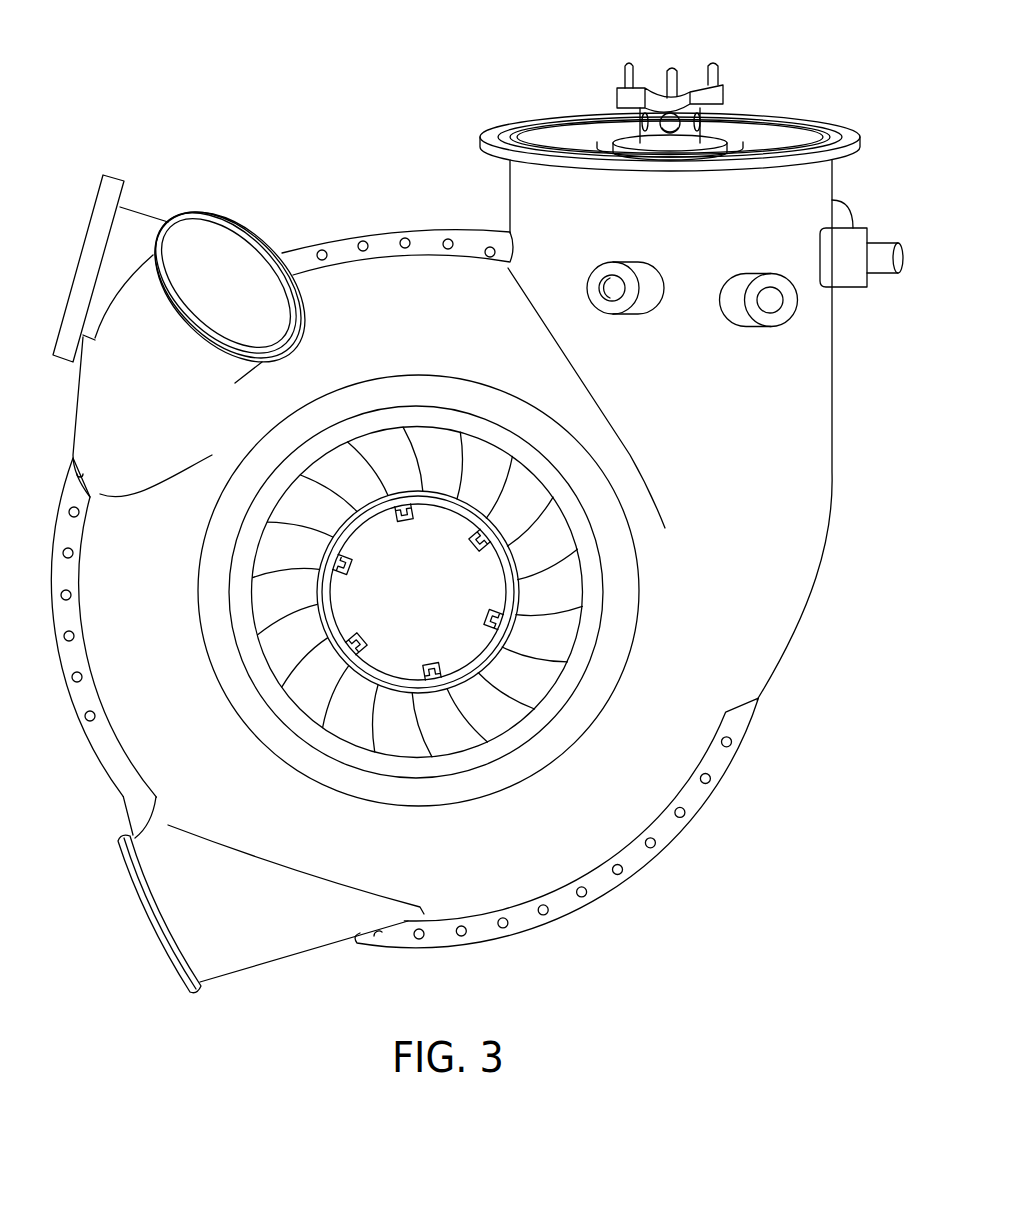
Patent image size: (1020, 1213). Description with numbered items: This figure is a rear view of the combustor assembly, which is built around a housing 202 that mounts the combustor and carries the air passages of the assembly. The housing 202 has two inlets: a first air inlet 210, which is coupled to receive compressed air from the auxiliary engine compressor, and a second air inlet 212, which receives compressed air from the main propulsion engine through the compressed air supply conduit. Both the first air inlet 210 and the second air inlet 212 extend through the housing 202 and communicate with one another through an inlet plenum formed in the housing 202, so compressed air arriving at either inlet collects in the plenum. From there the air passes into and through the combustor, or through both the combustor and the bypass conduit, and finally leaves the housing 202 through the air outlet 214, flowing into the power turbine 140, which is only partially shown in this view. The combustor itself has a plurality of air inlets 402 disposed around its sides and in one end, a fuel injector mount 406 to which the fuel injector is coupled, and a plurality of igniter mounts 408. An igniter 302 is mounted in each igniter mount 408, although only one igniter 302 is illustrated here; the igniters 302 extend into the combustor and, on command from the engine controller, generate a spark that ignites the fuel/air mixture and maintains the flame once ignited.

The power turbine 140 is at (307, 617).
The housing 202 is at (617, 837).
The first air inlet 210 is at (153, 930).
The second air inlet 212 is at (230, 270).
The air outlet 214 is at (443, 602).
The igniter 302 is at (887, 247).
The air inlet 402 is at (673, 120).
The fuel injector mount 406 is at (730, 97).
The igniter mount 408 is at (768, 328).